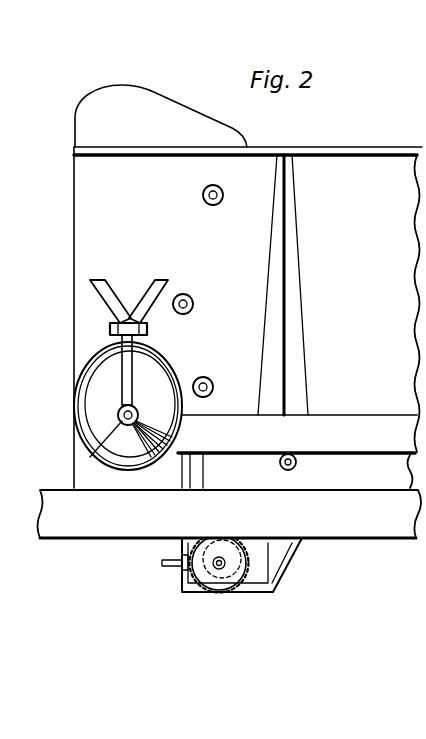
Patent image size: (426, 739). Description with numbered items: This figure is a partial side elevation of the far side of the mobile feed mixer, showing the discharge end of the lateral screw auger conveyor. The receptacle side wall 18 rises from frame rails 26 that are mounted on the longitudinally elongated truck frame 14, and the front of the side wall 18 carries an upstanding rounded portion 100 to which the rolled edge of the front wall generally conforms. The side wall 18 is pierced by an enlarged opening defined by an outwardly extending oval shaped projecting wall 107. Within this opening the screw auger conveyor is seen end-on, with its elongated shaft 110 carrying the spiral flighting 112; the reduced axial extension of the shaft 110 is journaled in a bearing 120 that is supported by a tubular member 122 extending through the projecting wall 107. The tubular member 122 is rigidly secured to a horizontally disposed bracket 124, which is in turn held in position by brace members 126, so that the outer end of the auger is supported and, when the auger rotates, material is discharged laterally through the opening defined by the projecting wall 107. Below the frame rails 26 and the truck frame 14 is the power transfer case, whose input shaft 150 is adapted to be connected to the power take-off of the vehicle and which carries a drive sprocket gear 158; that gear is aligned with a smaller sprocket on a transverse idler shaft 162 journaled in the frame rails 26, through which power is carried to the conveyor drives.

The upstanding rounded portion 100 is at (185, 108).
The side wall 18 is at (347, 163).
The frame rail 26 is at (393, 478).
The transverse idler shaft 162 is at (296, 467).
The drive sprocket gear 158 is at (225, 578).
The input shaft 150 is at (163, 567).
The truck frame 14 is at (358, 528).
The oval shaped projecting wall 107 is at (165, 355).
The spiral flighting 112 is at (160, 390).
The bearing 120 is at (121, 426).
The shaft 110 is at (122, 417).
The tubular member 122 is at (118, 356).
The bracket 124 is at (113, 330).
The brace member 126 is at (167, 283).